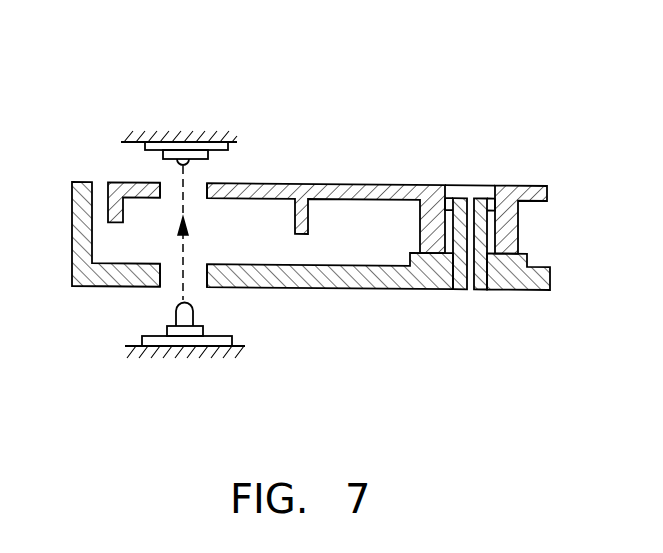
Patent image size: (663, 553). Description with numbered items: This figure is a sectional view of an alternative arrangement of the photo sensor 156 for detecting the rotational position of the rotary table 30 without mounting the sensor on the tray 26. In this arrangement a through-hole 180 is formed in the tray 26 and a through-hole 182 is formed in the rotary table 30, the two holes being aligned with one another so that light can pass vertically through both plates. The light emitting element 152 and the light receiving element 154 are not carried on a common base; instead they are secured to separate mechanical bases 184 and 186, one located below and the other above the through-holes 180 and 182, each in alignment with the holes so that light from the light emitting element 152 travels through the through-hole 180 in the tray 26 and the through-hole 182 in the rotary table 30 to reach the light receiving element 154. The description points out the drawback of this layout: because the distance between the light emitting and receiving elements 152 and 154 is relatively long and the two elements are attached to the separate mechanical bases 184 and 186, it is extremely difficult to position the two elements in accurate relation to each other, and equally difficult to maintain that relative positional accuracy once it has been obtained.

The tray 26 is at (317, 287).
The rotary table 30 is at (523, 183).
The light emitting element 152 is at (218, 337).
The light receiving element 154 is at (203, 166).
The photo sensor 156 is at (389, 60).
The through-hole 180 is at (160, 277).
The through-hole 182 is at (163, 189).
The mechanical base 184 is at (225, 348).
The mechanical base 186 is at (207, 142).